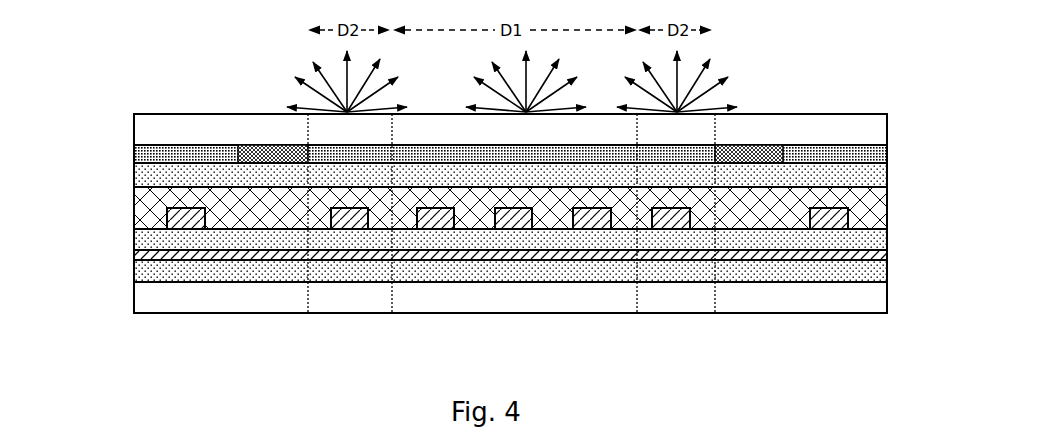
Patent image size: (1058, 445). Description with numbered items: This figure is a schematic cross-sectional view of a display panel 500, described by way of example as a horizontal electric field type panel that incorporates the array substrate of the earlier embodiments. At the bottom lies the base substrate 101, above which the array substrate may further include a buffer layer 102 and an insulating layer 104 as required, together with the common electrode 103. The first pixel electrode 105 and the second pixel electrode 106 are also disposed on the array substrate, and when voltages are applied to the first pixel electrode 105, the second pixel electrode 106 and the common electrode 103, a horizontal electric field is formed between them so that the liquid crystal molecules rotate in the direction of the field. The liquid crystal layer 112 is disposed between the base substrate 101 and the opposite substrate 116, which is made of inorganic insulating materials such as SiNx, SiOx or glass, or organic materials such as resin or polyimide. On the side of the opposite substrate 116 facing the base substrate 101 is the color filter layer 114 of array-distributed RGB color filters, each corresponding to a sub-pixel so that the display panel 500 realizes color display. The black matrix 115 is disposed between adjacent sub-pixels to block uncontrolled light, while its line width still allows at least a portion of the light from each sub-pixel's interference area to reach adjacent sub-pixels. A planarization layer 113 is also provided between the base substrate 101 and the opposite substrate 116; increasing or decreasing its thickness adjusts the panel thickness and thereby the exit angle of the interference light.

The base substrate 101 is at (134, 306).
The buffer layer 102 is at (134, 273).
The common electrode 103 is at (134, 255).
The insulating layer 104 is at (134, 233).
The first pixel electrode 105 is at (593, 217).
The second pixel electrode 106 is at (349, 218).
The liquid crystal layer 112 is at (134, 207).
The planarization layer 113 is at (134, 174).
The color filter layer 114 is at (134, 152).
The black matrix 115 is at (887, 153).
The opposite substrate 116 is at (134, 123).
The display panel 500 is at (782, 83).